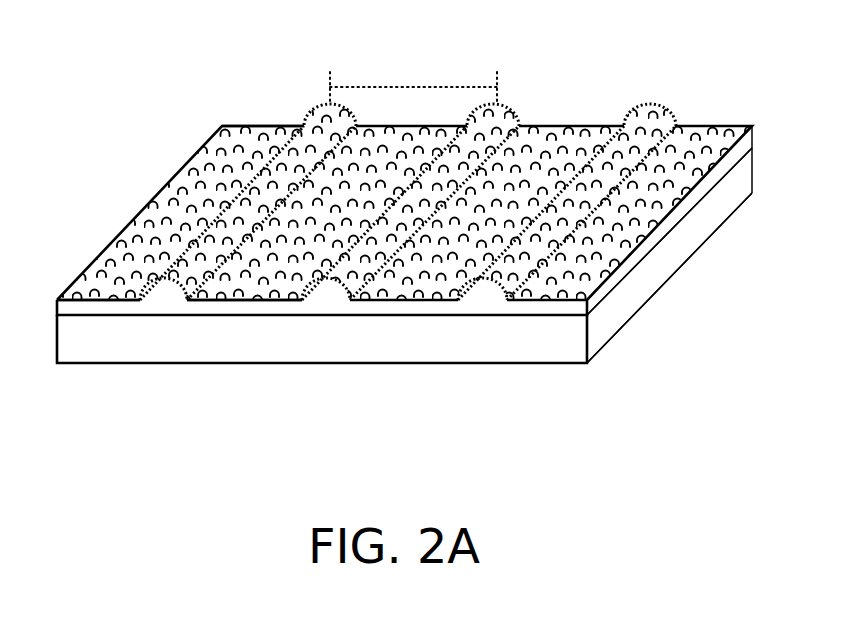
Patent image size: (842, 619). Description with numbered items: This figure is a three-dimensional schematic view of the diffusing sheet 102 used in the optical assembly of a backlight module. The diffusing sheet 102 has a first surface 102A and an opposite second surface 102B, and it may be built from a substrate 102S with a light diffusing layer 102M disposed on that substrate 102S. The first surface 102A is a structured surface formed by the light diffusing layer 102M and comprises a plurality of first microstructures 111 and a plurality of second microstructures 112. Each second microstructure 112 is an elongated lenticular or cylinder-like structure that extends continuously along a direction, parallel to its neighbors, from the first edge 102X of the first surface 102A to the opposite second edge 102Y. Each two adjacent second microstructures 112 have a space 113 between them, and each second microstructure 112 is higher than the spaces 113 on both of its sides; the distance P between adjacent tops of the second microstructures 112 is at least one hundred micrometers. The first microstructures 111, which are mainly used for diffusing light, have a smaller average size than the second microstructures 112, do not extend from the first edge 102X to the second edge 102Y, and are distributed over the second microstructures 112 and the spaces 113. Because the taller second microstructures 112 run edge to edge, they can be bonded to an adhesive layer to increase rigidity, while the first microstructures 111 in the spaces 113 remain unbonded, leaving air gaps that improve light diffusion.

The diffusing sheet 102 is at (417, 256).
The first surface of the diffusing sheet 102A is at (547, 138).
The second surface of the diffusing sheet 102B is at (547, 363).
The light diffusing layer 102M is at (566, 307).
The substrate 102S is at (565, 330).
The first edge of the first surface 102X is at (90, 300).
The second edge of the first surface 102Y is at (263, 126).
The first microstructures 111 is at (330, 155).
The second microstructures 112 is at (162, 290).
The space 113 is at (238, 300).
The distance between adjacent tops of the second microstructures P is at (413, 83).